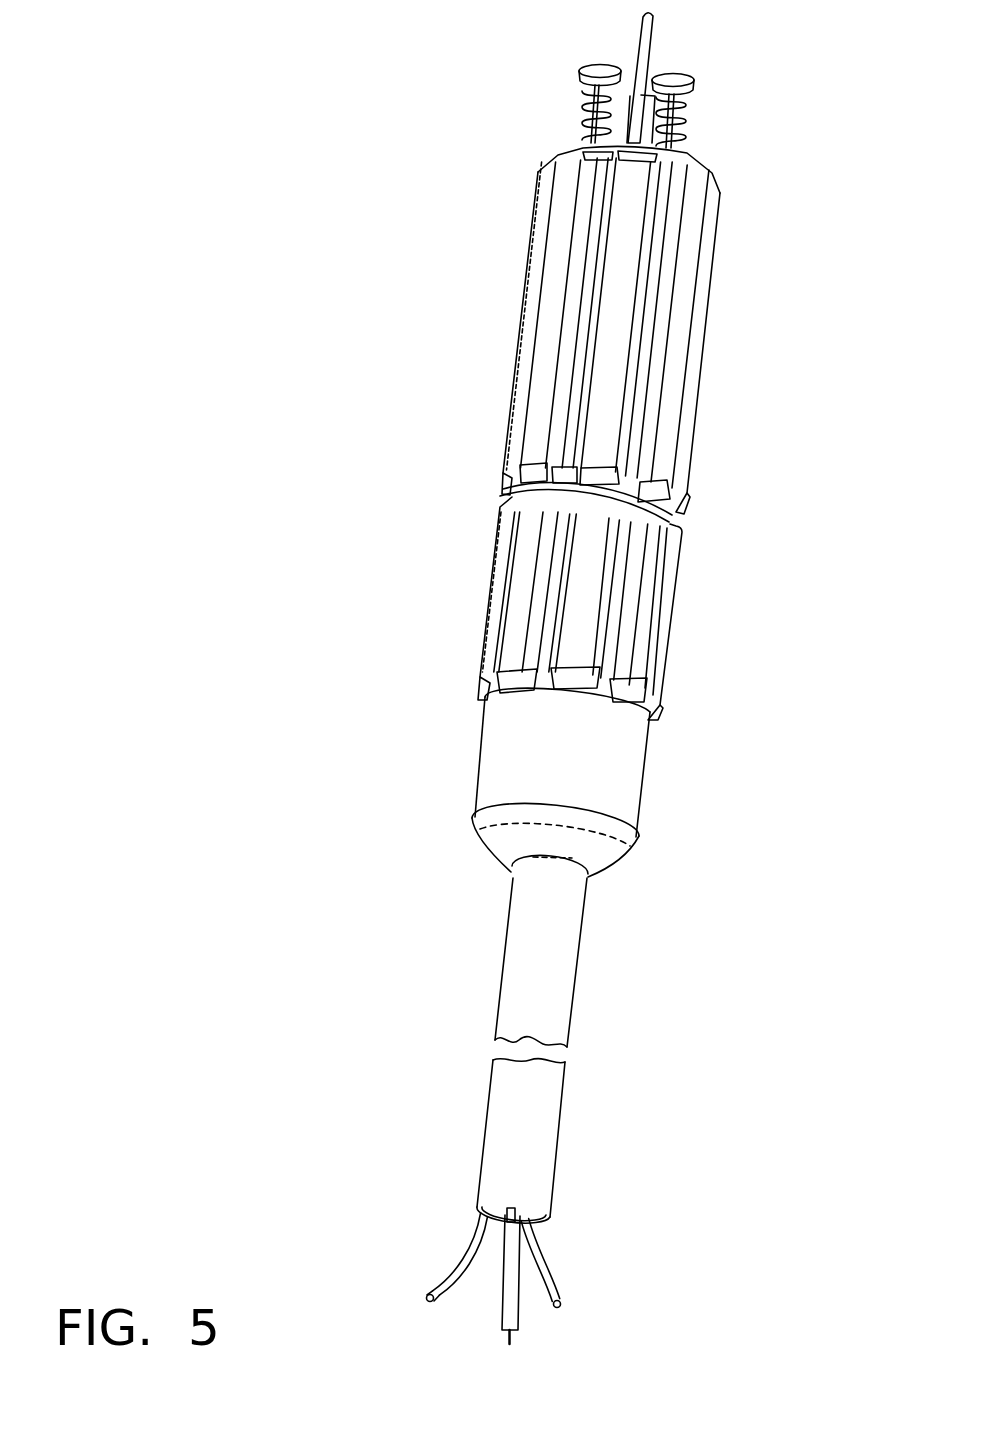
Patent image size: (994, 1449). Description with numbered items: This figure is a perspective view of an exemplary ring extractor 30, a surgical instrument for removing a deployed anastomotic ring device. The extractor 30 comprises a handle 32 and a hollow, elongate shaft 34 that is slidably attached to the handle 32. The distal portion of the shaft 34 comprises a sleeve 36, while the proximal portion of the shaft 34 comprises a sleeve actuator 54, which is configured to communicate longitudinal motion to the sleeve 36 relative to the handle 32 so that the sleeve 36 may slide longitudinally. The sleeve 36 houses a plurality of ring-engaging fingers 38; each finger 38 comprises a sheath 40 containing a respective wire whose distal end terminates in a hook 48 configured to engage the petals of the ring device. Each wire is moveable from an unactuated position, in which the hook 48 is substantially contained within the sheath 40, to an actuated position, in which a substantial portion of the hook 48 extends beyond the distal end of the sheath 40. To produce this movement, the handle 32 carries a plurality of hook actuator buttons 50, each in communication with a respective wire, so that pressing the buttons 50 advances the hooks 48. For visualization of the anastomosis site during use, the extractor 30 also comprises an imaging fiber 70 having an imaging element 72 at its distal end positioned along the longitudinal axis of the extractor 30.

The ring extractor 30 is at (348, 424).
The handle 32 is at (710, 425).
The shaft 34 is at (587, 1025).
The sleeve 36 is at (543, 1140).
The ring-engaging fingers 38 is at (560, 1273).
The sheath 40 is at (460, 1260).
The hook 48 is at (420, 1292).
The hook actuator buttons 50 is at (612, 63).
The sleeve actuator 54 is at (665, 690).
The imaging fiber 70 is at (651, 22).
The imaging element 72 is at (522, 1237).